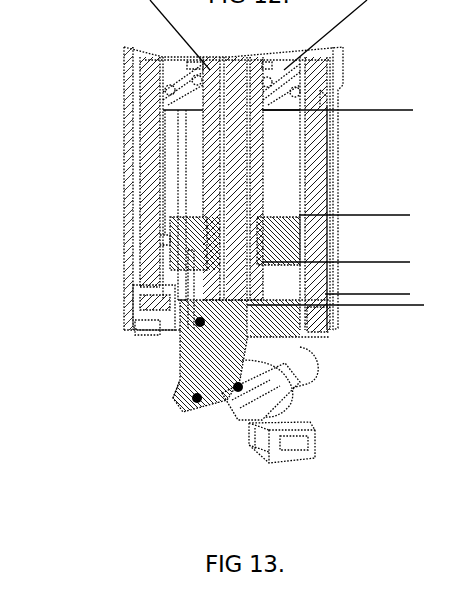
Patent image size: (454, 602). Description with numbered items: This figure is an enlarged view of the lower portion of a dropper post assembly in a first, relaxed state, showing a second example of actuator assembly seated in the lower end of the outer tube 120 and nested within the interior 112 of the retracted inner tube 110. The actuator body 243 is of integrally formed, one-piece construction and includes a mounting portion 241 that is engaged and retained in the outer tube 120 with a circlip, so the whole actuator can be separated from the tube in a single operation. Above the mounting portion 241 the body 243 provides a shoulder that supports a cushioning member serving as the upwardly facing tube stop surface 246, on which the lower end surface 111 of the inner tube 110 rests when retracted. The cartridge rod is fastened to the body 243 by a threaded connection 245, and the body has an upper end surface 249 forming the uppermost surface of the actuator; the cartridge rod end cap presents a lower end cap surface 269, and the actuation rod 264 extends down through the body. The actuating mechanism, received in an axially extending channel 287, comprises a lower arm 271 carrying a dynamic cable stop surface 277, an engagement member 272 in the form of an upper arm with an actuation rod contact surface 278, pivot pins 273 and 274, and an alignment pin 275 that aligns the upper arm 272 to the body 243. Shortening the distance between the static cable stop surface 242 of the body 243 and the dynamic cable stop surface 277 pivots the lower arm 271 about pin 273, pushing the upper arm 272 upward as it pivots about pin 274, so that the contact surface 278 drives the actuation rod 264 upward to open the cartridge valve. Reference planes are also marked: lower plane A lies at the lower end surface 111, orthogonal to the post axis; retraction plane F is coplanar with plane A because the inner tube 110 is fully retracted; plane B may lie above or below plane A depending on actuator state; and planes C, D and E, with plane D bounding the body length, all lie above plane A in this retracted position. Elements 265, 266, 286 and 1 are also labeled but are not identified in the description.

The lower end cap surface 269 is at (182, 108).
The actuation rod 264 is at (237, 125).
The outer wall 265 is at (131, 172).
The threaded connection 245 is at (205, 238).
The interior 112 is at (163, 250).
The actuation rod contact surface 278 is at (207, 300).
The lower end surface 111 is at (92, 277).
The tube stop surface 246 is at (147, 293).
The mounting portion 241 is at (133, 328).
The channel 287 is at (190, 303).
The alignment pin 275 is at (195, 326).
The engagement member 272 is at (182, 367).
The lower arm 271 is at (193, 400).
The pivot pin 274 is at (178, 400).
The pivot pin 273 is at (236, 390).
The actuator body 243 is at (243, 433).
The static cable stop surface 242 is at (294, 443).
The box element 286 is at (249, 423).
The dynamic cable stop surface 277 is at (289, 375).
The outer tube 120 is at (344, 322).
The inner tube 110 is at (315, 155).
The upper end surface 249 is at (270, 215).
The right block 266 is at (250, 266).
The plane E is at (383, 110).
The plane D is at (380, 215).
The plane C is at (369, 262).
The lower plane A is at (387, 273).
The retraction plane F is at (389, 294).
The plane B is at (414, 305).
The device 1 is at (450, 251).